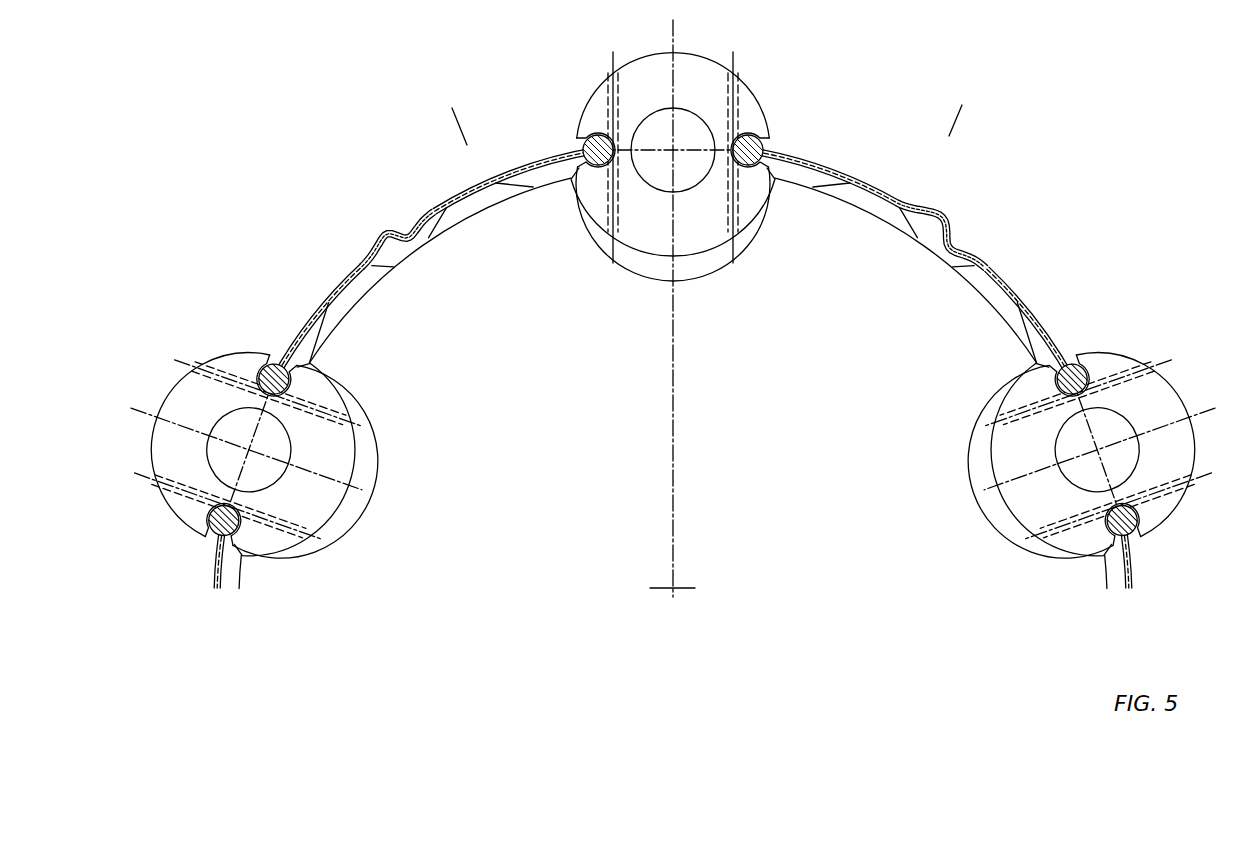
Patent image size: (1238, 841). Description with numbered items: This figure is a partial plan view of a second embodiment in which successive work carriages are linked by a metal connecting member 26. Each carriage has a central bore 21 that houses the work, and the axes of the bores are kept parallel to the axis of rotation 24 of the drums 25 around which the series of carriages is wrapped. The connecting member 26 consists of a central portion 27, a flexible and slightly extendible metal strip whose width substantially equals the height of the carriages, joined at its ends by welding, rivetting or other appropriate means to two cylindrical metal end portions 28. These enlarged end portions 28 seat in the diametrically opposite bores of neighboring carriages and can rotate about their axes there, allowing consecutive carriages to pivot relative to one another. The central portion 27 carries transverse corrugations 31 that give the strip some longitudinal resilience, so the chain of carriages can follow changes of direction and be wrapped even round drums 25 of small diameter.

The central bore 21 is at (668, 318).
The axis of rotation 24 is at (678, 551).
The drum 25 is at (673, 378).
The connecting member 26 is at (710, 129).
The central portion 27 is at (333, 293).
The end portion 28 is at (597, 140).
The transverse corrugation 31 is at (396, 224).